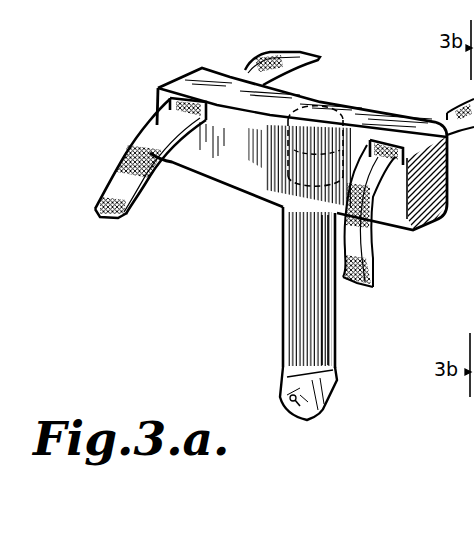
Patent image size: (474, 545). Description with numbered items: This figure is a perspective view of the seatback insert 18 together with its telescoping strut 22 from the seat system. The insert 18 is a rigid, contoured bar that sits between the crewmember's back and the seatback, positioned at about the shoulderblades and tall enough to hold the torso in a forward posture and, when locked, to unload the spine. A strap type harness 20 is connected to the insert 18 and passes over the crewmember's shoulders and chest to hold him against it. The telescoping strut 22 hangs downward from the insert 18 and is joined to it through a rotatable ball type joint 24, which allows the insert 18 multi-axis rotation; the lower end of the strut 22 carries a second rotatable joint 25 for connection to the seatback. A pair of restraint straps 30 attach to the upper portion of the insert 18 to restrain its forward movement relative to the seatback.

The seatback insert 18 is at (218, 160).
The harness system 20 is at (128, 152).
The telescoping strut 22 is at (327, 313).
The ball type joint 24 is at (310, 103).
The rotatable joint 25 is at (287, 378).
The straps 30 is at (245, 68).